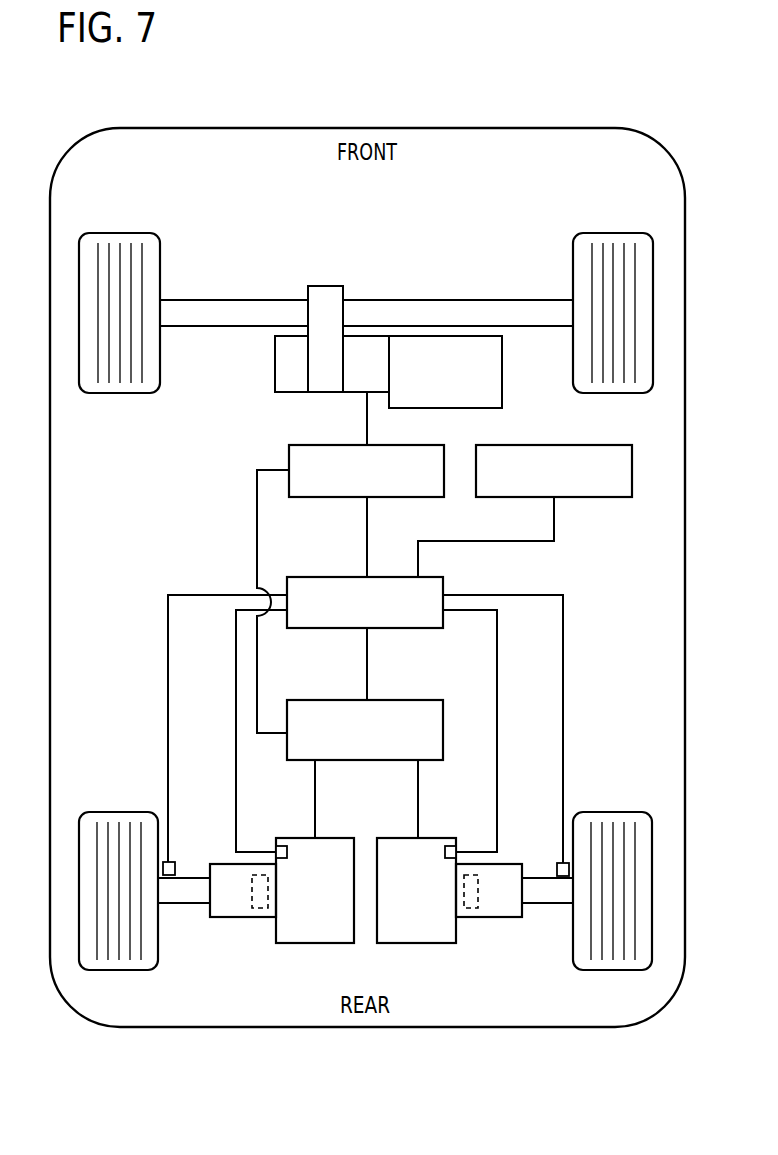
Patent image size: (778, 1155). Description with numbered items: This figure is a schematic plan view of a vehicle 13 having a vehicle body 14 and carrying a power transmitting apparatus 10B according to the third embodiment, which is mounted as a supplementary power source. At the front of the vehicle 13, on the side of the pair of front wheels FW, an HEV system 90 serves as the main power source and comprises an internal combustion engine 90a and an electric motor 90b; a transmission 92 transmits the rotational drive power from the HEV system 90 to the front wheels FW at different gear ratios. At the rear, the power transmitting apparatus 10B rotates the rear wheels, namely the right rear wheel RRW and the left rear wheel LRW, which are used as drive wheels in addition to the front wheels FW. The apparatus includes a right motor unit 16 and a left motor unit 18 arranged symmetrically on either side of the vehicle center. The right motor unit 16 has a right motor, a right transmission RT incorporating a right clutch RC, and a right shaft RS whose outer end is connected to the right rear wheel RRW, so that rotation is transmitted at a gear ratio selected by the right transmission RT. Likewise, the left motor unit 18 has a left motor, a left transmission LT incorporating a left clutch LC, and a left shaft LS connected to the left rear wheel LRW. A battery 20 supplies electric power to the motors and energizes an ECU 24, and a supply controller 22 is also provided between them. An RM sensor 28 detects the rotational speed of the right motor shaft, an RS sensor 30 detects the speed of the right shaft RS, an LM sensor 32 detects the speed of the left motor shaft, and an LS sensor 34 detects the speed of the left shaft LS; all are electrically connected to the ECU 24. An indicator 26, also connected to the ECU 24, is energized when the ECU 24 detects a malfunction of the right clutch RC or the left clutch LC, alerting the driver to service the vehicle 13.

The vehicle 13 is at (208, 97).
The vehicle body 14 is at (488, 128).
The power transmitting apparatus 10B is at (184, 502).
The right motor unit 16 is at (397, 836).
The left motor unit 18 is at (334, 836).
The battery 20 is at (313, 445).
The supply controller 22 is at (312, 700).
The ECU 24 is at (313, 577).
The indicator 26 is at (528, 445).
The RM sensor 28 is at (447, 846).
The RS sensor 30 is at (557, 868).
The LM sensor 32 is at (281, 846).
The LS sensor 34 is at (175, 868).
The HEV system 90 is at (388, 305).
The internal combustion engine 90a is at (445, 327).
The electric motor 90b is at (370, 336).
The transmission 92 is at (325, 286).
The front wheels FW is at (122, 233).
The left rear wheel LRW is at (122, 812).
The right rear wheel RRW is at (624, 812).
The left shaft LS is at (188, 895).
The right shaft RS is at (543, 895).
The left transmission LT is at (227, 917).
The right transmission RT is at (505, 917).
The left clutch LC is at (260, 908).
The right clutch RC is at (468, 908).